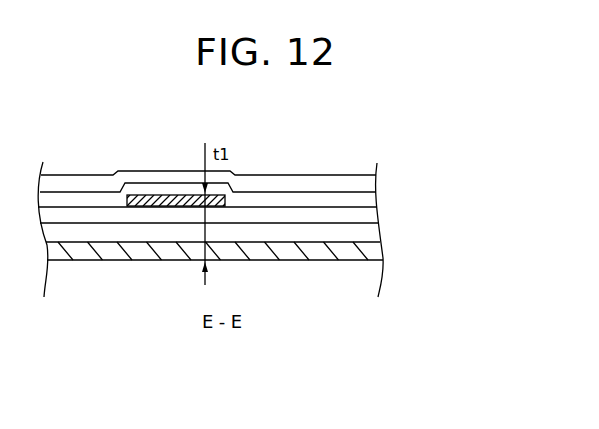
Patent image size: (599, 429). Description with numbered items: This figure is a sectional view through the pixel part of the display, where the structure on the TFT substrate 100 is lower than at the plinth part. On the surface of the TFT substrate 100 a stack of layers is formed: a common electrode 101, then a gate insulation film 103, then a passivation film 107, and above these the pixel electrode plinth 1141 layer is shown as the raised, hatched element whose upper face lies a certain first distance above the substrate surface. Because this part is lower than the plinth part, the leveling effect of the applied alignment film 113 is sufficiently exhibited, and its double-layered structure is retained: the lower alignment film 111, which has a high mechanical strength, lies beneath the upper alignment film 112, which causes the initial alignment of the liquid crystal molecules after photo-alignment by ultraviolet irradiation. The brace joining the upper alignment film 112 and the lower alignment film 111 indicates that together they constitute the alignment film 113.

The TFT substrate 100 is at (368, 278).
The common electrode 101 is at (365, 250).
The gate insulation film 103 is at (368, 232).
The passivation film 107 is at (365, 210).
The pixel electrode plinth 1141 is at (153, 194).
The lower alignment film 111 is at (364, 199).
The upper alignment film 112 is at (363, 183).
The alignment film 113 is at (271, 179).